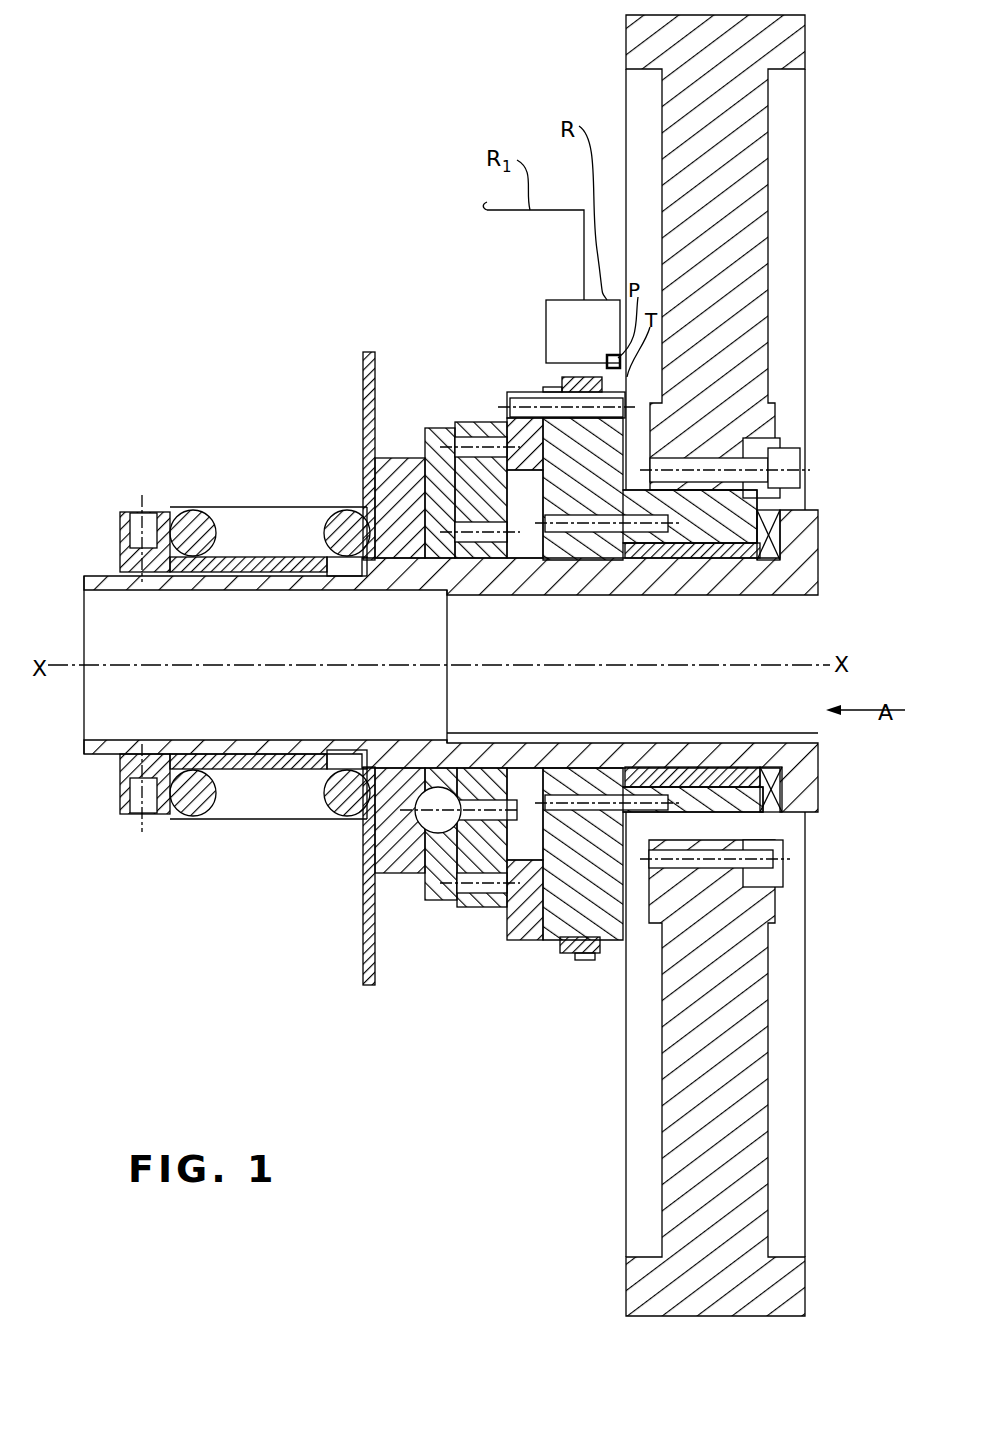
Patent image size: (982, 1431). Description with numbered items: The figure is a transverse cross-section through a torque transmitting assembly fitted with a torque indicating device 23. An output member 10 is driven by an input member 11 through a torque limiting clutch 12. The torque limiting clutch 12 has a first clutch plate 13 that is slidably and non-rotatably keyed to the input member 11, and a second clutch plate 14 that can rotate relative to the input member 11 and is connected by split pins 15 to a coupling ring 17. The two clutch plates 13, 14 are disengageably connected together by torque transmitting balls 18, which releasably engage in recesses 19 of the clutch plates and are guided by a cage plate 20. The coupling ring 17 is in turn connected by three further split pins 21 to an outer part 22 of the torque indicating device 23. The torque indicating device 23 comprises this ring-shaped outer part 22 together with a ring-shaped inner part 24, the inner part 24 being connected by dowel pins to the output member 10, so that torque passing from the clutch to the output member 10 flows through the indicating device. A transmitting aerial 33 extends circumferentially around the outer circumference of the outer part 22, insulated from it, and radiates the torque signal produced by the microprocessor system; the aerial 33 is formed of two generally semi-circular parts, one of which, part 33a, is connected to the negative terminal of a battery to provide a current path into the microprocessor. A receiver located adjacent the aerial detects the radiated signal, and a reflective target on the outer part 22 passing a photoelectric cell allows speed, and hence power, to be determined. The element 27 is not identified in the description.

The output member 10 is at (806, 22).
The input member 11 is at (118, 748).
The torque limiting clutch 12 is at (440, 955).
The first clutch plate 13 is at (390, 880).
The second clutch plate 14 is at (468, 910).
The split pins 15 is at (495, 910).
The coupling ring 17 is at (525, 935).
The torque transmitting balls 18 is at (460, 907).
The recesses 19 is at (437, 826).
The cage plate 20 is at (417, 900).
The further split pins 21 is at (507, 395).
The outer part 22 is at (770, 300).
The torque indicating device 23 is at (556, 349).
The inner part 24 is at (587, 547).
The collar 27 is at (653, 560).
The transmitting aerial 33 is at (560, 380).
The semi-circular part 33a is at (548, 388).